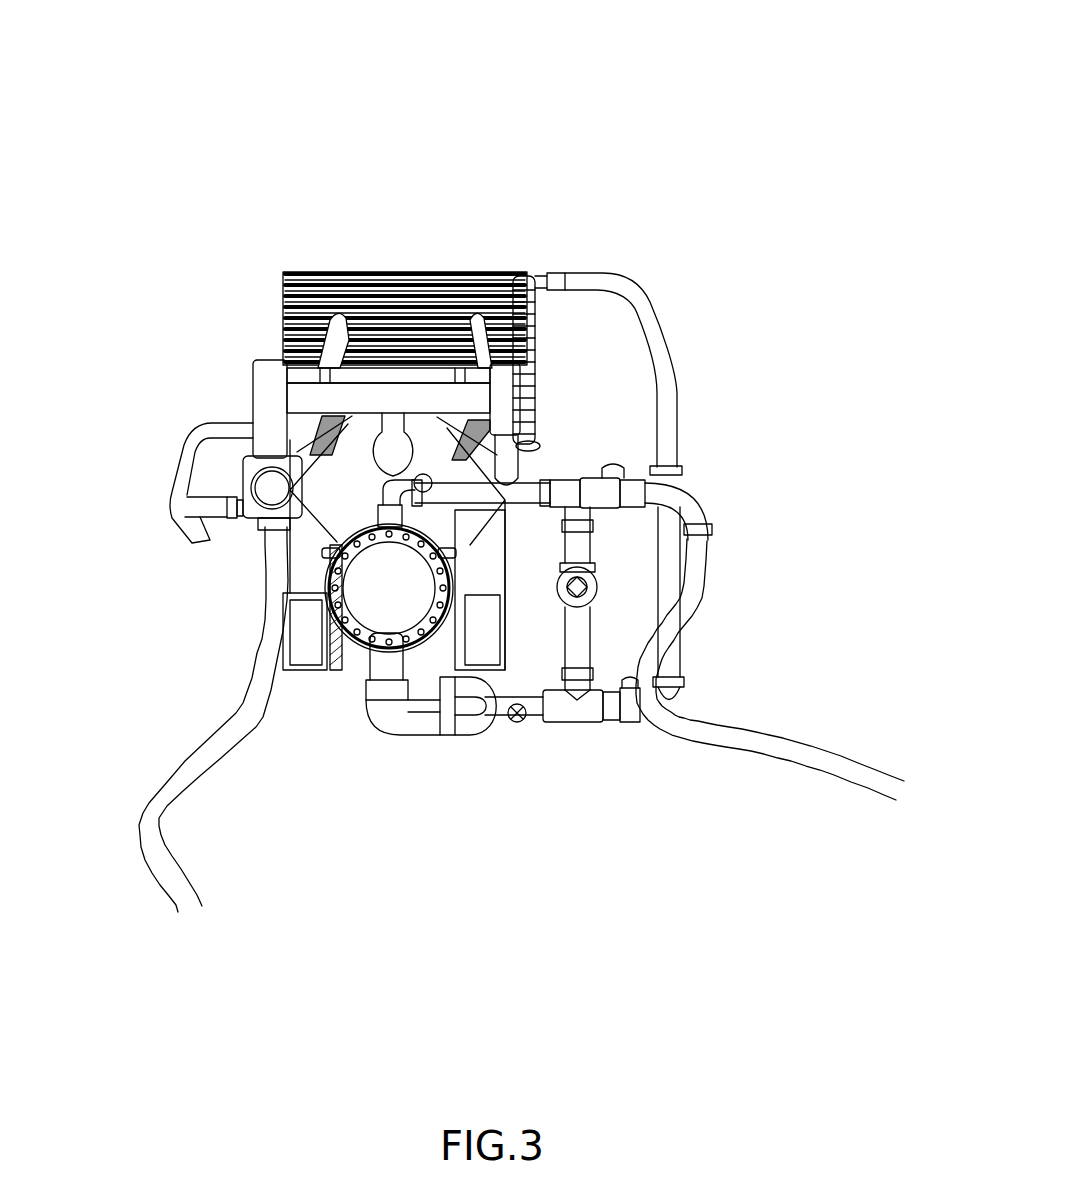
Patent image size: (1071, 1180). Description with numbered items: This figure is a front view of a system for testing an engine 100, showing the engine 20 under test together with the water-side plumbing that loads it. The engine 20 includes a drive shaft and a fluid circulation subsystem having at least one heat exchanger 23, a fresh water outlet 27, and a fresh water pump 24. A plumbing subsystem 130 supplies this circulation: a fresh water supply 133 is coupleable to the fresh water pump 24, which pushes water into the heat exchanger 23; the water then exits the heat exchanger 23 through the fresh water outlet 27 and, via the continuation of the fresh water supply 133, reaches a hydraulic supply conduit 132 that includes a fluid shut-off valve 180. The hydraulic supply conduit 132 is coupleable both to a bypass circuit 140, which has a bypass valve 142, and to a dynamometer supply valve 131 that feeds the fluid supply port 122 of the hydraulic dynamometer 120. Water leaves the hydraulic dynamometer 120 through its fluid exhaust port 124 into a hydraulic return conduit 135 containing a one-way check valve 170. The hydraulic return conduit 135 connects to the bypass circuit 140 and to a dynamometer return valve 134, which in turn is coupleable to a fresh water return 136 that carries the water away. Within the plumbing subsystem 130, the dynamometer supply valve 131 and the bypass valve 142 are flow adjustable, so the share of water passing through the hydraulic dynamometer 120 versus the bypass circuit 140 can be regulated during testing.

The system for testing an engine 100 is at (583, 90).
The plumbing subsystem 130 is at (620, 113).
The engine 20 is at (286, 332).
The heat exchanger 23 is at (325, 268).
The fresh water outlet 27 is at (547, 270).
The fresh water pump 24 is at (262, 494).
The hydraulic dynamometer 120 is at (365, 595).
The fluid supply port 122 is at (413, 720).
The fluid exhaust port 124 is at (340, 534).
The dynamometer supply valve 131 is at (513, 727).
The hydraulic supply conduit 132 is at (668, 365).
The fresh water supply 133 is at (185, 445).
The dynamometer return valve 134 is at (630, 497).
The hydraulic return conduit 135 is at (512, 494).
The fresh water return 136 is at (830, 767).
The bypass circuit 140 is at (575, 652).
The bypass valve 142 is at (597, 580).
The one-way check valve 170 is at (407, 490).
The fluid shut-off valve 180 is at (625, 715).